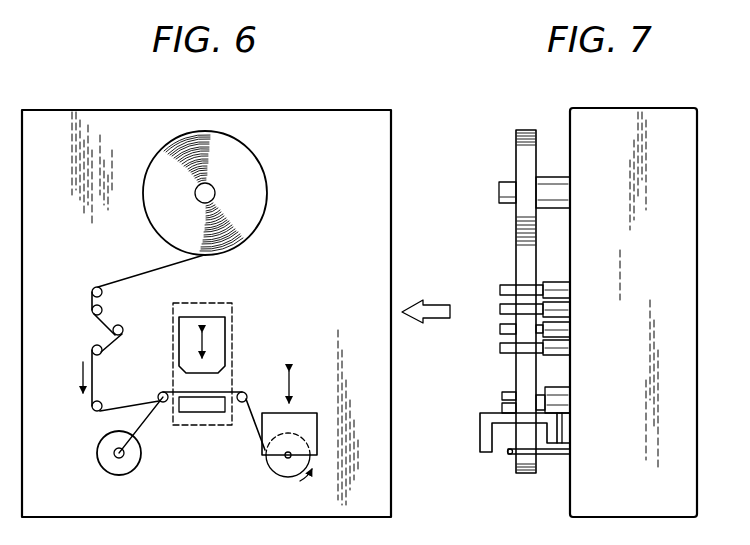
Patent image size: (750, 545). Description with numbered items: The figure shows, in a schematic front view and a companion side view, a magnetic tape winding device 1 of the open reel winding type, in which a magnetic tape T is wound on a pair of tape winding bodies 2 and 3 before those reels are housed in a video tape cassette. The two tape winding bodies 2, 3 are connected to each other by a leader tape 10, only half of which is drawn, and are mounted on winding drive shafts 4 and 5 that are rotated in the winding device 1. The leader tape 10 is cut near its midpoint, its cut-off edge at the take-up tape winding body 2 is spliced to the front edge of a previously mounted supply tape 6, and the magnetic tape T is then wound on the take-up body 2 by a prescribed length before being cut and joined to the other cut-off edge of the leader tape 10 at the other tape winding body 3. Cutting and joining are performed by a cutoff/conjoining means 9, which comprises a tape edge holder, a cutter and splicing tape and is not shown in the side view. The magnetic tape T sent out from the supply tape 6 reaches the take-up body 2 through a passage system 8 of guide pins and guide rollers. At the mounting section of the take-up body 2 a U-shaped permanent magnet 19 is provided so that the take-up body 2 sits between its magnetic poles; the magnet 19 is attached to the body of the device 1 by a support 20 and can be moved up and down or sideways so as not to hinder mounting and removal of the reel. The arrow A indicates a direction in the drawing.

In FIG. 6, the magnetic tape winding device 1 is at (394, 197).
In FIG. 7, the magnetic tape winding device 1 is at (702, 192).
In FIG. 6, the take-up tape winding body 2 is at (264, 456).
In FIG. 7, the take-up tape winding body 2 is at (513, 467).
In FIG. 6, the tape winding body 3 is at (97, 456).
In FIG. 7, the tape winding body 3 is at (509, 402).
In FIG. 7, the winding drive shaft 4 is at (548, 436).
In FIG. 7, the winding drive shaft 5 is at (559, 428).
In FIG. 6, the supply tape 6 is at (268, 198).
In FIG. 7, the supply tape 6 is at (516, 143).
In FIG. 6, the passage system 8 is at (83, 302).
In FIG. 7, the passage system 8 is at (492, 306).
In FIG. 6, the cutoff/conjoining means 9 is at (233, 339).
In FIG. 6, the leader tape 10 is at (141, 421).
In FIG. 6, the permanent magnet 19 is at (306, 418).
In FIG. 7, the permanent magnet 19 is at (490, 413).
In FIG. 7, the support 20 is at (568, 432).
In FIG. 6, the magnetic tape T is at (134, 276).
In FIG. 7, the magnetic tape T is at (516, 243).
In FIG. 6, the direction arrow A is at (432, 311).